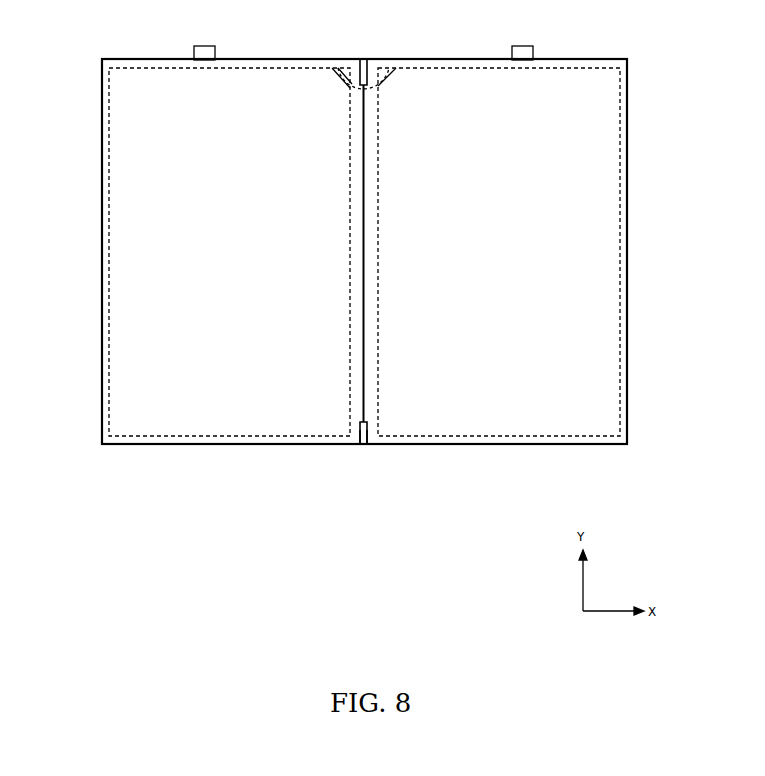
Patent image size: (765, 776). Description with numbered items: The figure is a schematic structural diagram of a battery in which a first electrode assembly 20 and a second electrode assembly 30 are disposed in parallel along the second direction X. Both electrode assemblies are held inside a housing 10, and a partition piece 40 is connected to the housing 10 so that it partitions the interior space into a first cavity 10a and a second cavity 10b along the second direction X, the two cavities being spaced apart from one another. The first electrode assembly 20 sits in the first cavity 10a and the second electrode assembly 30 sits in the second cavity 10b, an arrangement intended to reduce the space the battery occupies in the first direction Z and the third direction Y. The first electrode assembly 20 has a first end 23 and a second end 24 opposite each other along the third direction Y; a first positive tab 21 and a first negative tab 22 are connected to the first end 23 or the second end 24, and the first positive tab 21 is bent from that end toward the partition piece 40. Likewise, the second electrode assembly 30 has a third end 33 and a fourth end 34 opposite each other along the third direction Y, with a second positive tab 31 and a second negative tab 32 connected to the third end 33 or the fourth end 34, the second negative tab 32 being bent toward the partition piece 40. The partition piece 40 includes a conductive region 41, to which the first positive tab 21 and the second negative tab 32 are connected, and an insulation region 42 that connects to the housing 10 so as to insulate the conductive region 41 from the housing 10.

The housing 10 is at (628, 180).
The first cavity 10a is at (120, 337).
The second cavity 10b is at (610, 361).
The first electrode assembly 20 is at (124, 284).
The first positive tab 21 is at (343, 63).
The first negative tab 22 is at (206, 45).
The first end 23 is at (288, 58).
The second end 24 is at (222, 453).
The second electrode assembly 30 is at (616, 284).
The second positive tab 31 is at (520, 45).
The second negative tab 32 is at (400, 63).
The third end 33 is at (587, 58).
The fourth end 34 is at (522, 453).
The partition piece 40 is at (408, 480).
The conductive region 41 is at (367, 421).
The insulation region 42 is at (361, 445).